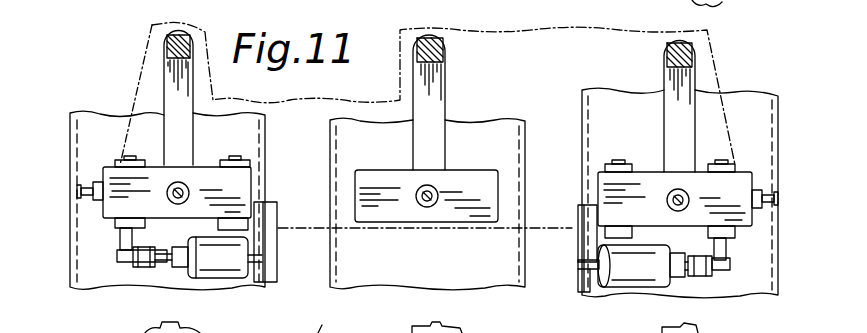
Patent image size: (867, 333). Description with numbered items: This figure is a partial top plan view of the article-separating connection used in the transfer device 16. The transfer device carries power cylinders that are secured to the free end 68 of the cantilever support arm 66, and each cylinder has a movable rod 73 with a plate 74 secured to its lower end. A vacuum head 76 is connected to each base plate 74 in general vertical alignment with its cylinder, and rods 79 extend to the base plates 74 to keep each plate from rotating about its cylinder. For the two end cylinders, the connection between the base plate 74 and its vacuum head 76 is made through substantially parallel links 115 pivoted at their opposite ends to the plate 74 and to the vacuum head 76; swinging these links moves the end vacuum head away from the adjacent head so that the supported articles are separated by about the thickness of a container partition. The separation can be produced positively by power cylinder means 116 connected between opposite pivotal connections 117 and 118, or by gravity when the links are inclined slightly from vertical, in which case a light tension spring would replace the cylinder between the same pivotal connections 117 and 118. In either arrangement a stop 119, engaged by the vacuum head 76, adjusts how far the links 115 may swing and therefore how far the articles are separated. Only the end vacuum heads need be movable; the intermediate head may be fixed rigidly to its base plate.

The transfer device 16 is at (140, 71).
The cantilever support arm 66 is at (718, 62).
The free end 68 is at (310, 232).
The movable rod 73 is at (670, 192).
The plate 74 is at (108, 172).
The vacuum head 76 is at (575, 283).
The rod 79 is at (178, 97).
The links 115 is at (233, 221).
The power cylinder means 116 is at (222, 276).
The pivotal connection 117 is at (590, 284).
The pivotal connection 118 is at (720, 276).
The stop 119 is at (90, 196).